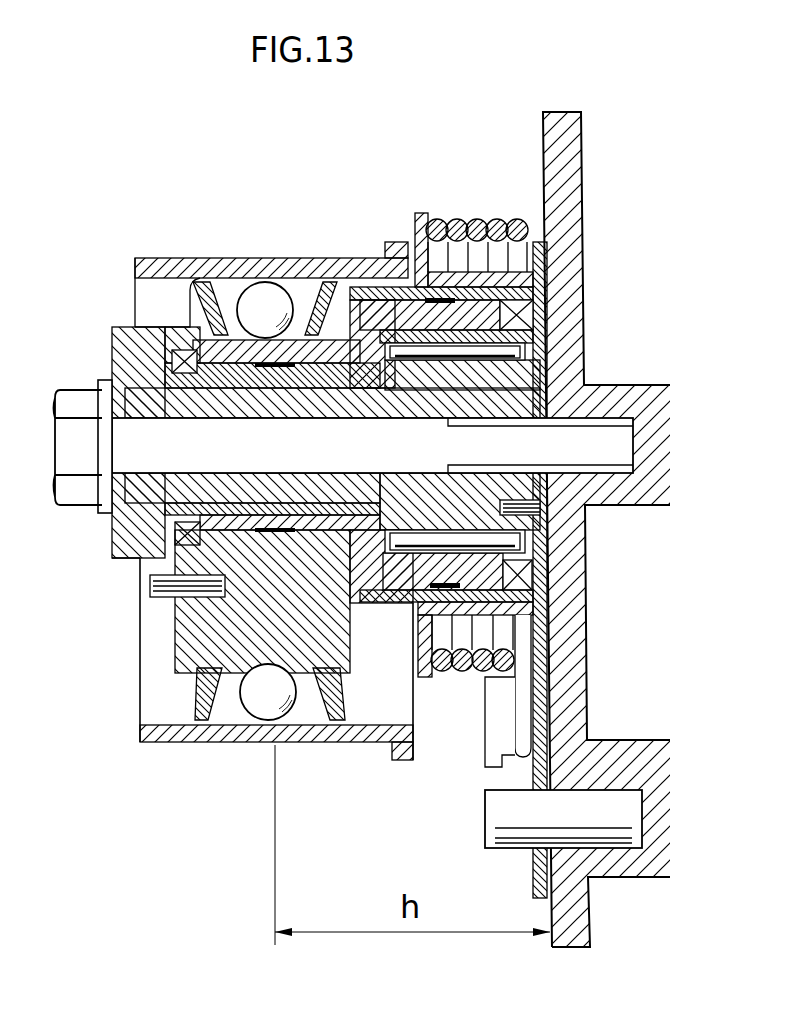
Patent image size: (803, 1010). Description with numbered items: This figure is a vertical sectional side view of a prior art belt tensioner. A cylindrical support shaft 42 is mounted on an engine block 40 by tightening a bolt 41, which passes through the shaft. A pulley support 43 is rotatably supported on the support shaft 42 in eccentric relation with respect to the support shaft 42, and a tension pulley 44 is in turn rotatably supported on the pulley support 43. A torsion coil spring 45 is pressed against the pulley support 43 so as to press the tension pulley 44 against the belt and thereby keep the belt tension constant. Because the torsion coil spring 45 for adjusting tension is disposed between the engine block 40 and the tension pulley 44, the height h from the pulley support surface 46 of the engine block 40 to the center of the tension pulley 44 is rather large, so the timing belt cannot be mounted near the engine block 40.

The engine block 40 is at (552, 118).
The bolt 41 is at (566, 430).
The cylindrical support shaft 42 is at (112, 350).
The pulley support 43 is at (190, 632).
The tension pulley 44 is at (183, 745).
The torsion coil spring 45 is at (505, 637).
The pulley support surface 46 is at (545, 185).